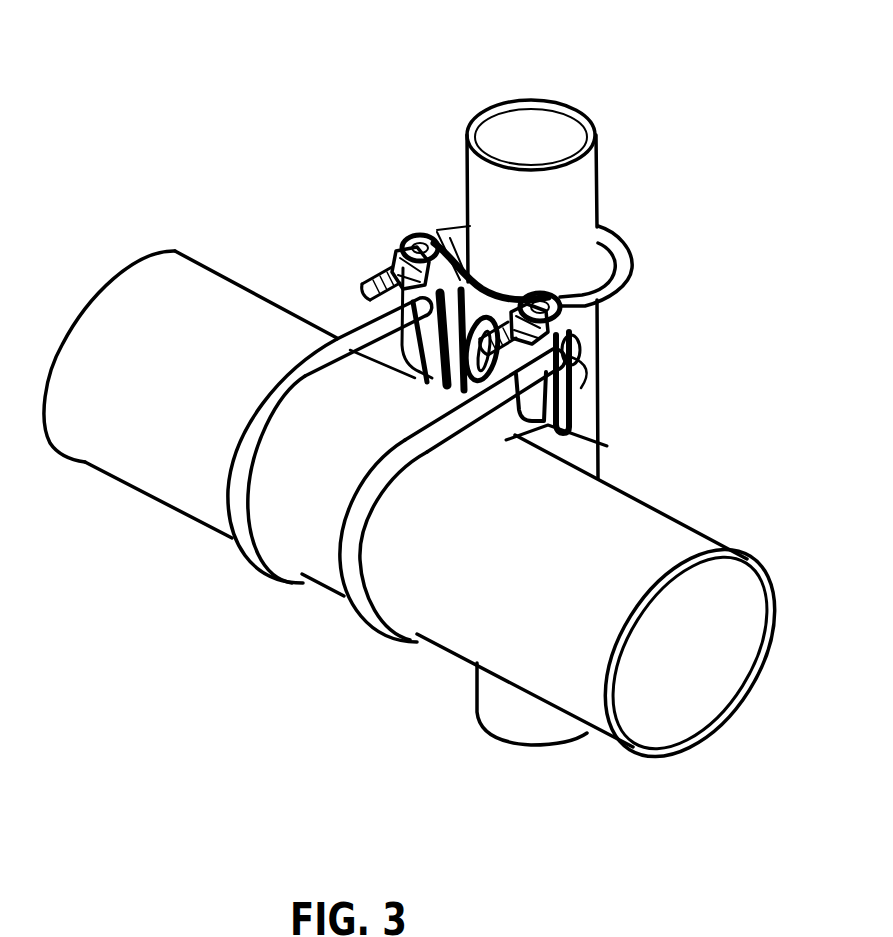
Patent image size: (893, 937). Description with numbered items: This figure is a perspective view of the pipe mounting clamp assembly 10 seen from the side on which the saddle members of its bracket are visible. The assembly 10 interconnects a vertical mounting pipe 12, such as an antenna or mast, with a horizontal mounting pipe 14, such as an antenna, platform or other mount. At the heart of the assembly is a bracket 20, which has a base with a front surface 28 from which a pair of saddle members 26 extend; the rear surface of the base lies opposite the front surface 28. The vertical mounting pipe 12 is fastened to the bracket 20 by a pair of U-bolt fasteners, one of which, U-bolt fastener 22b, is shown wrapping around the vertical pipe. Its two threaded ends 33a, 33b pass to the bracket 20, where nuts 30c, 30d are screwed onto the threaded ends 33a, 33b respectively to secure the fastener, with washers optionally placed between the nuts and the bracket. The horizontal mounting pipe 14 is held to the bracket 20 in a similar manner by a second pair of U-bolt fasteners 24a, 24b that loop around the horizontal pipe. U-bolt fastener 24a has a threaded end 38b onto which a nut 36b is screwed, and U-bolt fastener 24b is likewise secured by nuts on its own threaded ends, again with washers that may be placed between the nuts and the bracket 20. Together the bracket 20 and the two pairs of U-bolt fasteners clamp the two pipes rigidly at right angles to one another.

The pipe mounting clamp assembly 10 is at (313, 133).
The vertical mounting pipe 12 is at (583, 178).
The horizontal mounting pipe 14 is at (667, 540).
The bracket 20 is at (460, 306).
The U-bolt fastener 22b is at (612, 267).
The U-bolt fastener 24a is at (370, 626).
The U-bolt fastener 24b is at (250, 553).
The saddle members 26 is at (418, 390).
The front surface 28 is at (472, 283).
The nut 30c is at (563, 327).
The nut 30d is at (400, 258).
The threaded end 33a is at (453, 385).
The threaded end 33b is at (366, 292).
The nut 36b is at (582, 368).
The threaded end 38b is at (580, 352).